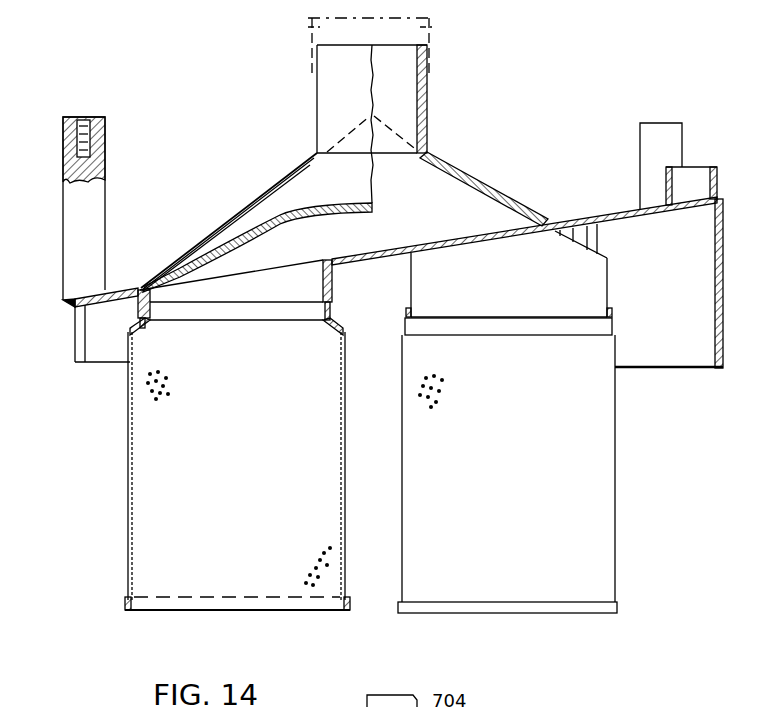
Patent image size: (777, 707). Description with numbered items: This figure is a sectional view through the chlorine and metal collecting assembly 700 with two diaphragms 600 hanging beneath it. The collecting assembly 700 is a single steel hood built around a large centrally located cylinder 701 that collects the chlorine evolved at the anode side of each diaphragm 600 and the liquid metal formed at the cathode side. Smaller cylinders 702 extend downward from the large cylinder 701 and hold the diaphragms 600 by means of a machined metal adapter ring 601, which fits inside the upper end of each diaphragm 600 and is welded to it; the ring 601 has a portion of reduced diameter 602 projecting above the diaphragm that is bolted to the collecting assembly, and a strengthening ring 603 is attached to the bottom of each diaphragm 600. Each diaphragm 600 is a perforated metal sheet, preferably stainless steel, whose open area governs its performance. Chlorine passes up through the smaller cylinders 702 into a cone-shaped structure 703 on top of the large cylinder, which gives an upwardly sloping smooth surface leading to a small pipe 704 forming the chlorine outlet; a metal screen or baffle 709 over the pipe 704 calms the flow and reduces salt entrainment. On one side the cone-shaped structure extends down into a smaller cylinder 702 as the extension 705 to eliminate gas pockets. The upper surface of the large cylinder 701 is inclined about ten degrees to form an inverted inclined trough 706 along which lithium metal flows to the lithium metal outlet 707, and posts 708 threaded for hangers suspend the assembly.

The chlorine and metal collecting assembly 700 is at (276, 135).
The large centrally located cylinder 701 is at (75, 340).
The smaller cylinders 702 is at (332, 283).
The cone-shaped structure 703 is at (234, 222).
The small cylinder or pipe 704 is at (412, 83).
The downward extension of cone-shaped structure 705 is at (596, 251).
The inverted inclined trough 706 is at (636, 206).
The lithium metal outlet 707 is at (700, 171).
The posts 708 is at (63, 256).
The metal screen or baffle 709 is at (432, 32).
The diaphragm 600 is at (130, 505).
The adapter ring 601 is at (338, 328).
The portion of reduced diameter 602 is at (152, 310).
The strengthening ring 603 is at (124, 605).